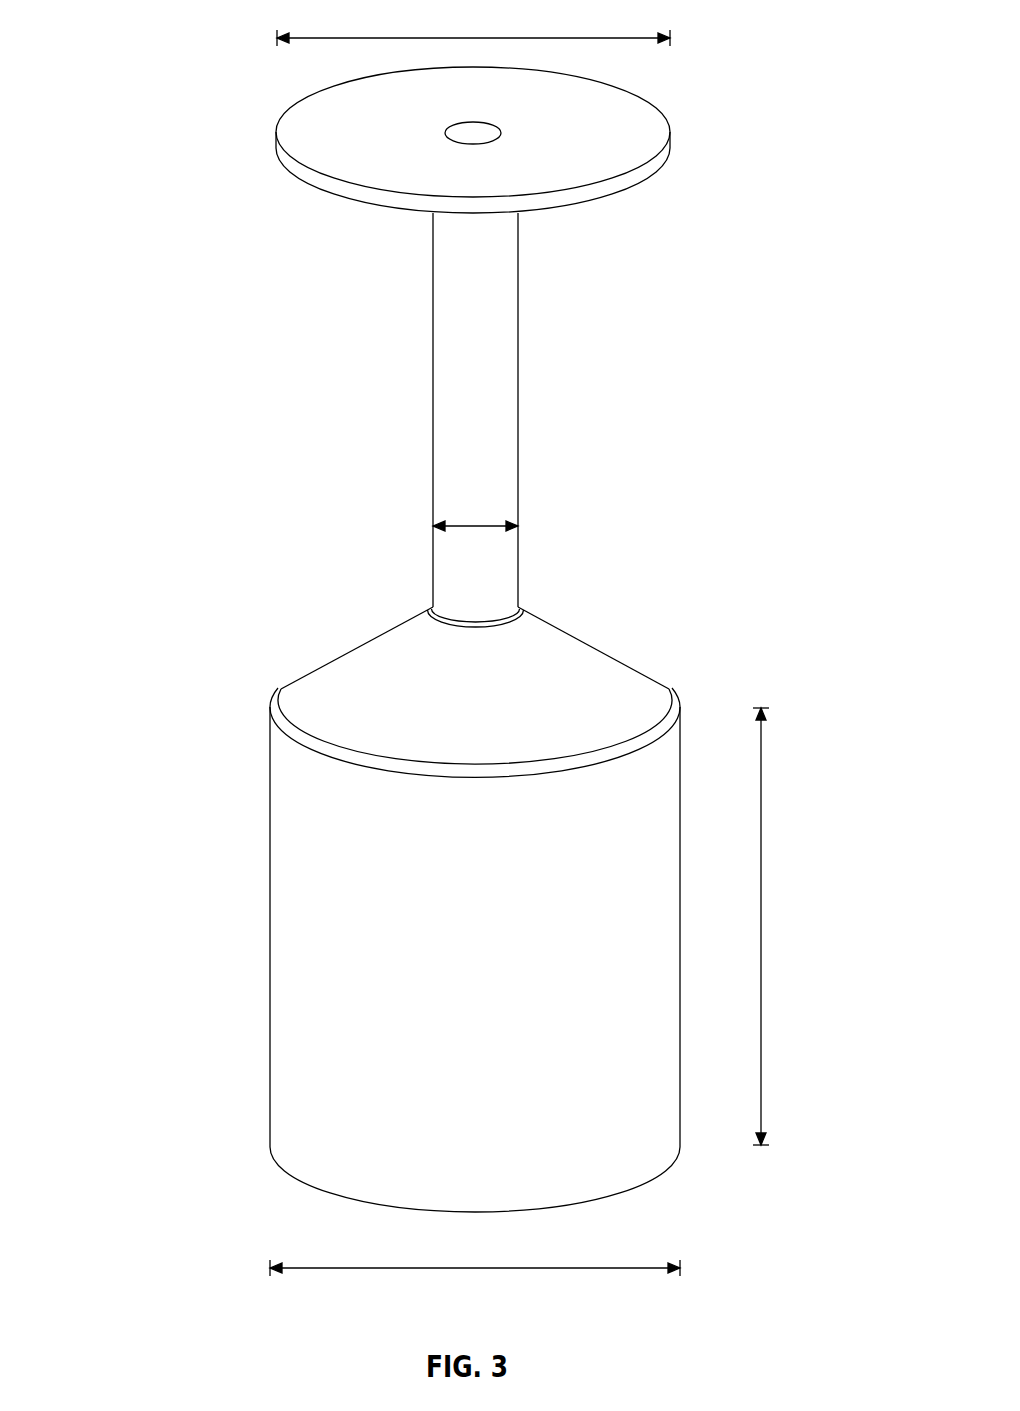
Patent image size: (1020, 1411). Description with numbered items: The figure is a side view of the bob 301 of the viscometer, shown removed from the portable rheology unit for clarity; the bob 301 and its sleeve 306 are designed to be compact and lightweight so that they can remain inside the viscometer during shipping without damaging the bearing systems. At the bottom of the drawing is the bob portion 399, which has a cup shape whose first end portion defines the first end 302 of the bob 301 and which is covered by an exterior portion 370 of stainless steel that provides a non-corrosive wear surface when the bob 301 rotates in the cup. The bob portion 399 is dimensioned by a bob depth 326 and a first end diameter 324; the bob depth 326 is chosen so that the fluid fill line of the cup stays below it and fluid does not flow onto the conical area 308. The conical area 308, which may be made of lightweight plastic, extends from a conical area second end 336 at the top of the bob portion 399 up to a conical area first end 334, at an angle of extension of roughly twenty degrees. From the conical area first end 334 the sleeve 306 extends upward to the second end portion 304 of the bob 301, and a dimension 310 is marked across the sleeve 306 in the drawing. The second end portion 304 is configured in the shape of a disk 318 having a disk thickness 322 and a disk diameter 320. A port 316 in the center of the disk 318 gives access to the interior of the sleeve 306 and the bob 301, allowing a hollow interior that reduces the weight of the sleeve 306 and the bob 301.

The disk 318 is at (562, 83).
The disk thickness 322 is at (628, 183).
The port 316 is at (478, 133).
The second end portion 304 is at (323, 150).
The disk diameter 320 is at (472, 37).
The sleeve 306 is at (518, 378).
The shaft diameter 310 is at (490, 523).
The conical area first end 334 is at (532, 600).
The conical area 308 is at (617, 668).
The conical area second end 336 is at (278, 688).
The first end 302 is at (318, 1197).
The exterior portion 370 is at (270, 942).
The first end diameter 324 is at (475, 1269).
The bob depth 326 is at (762, 938).
The bob 301 is at (178, 68).
The bob portion 399 is at (812, 661).